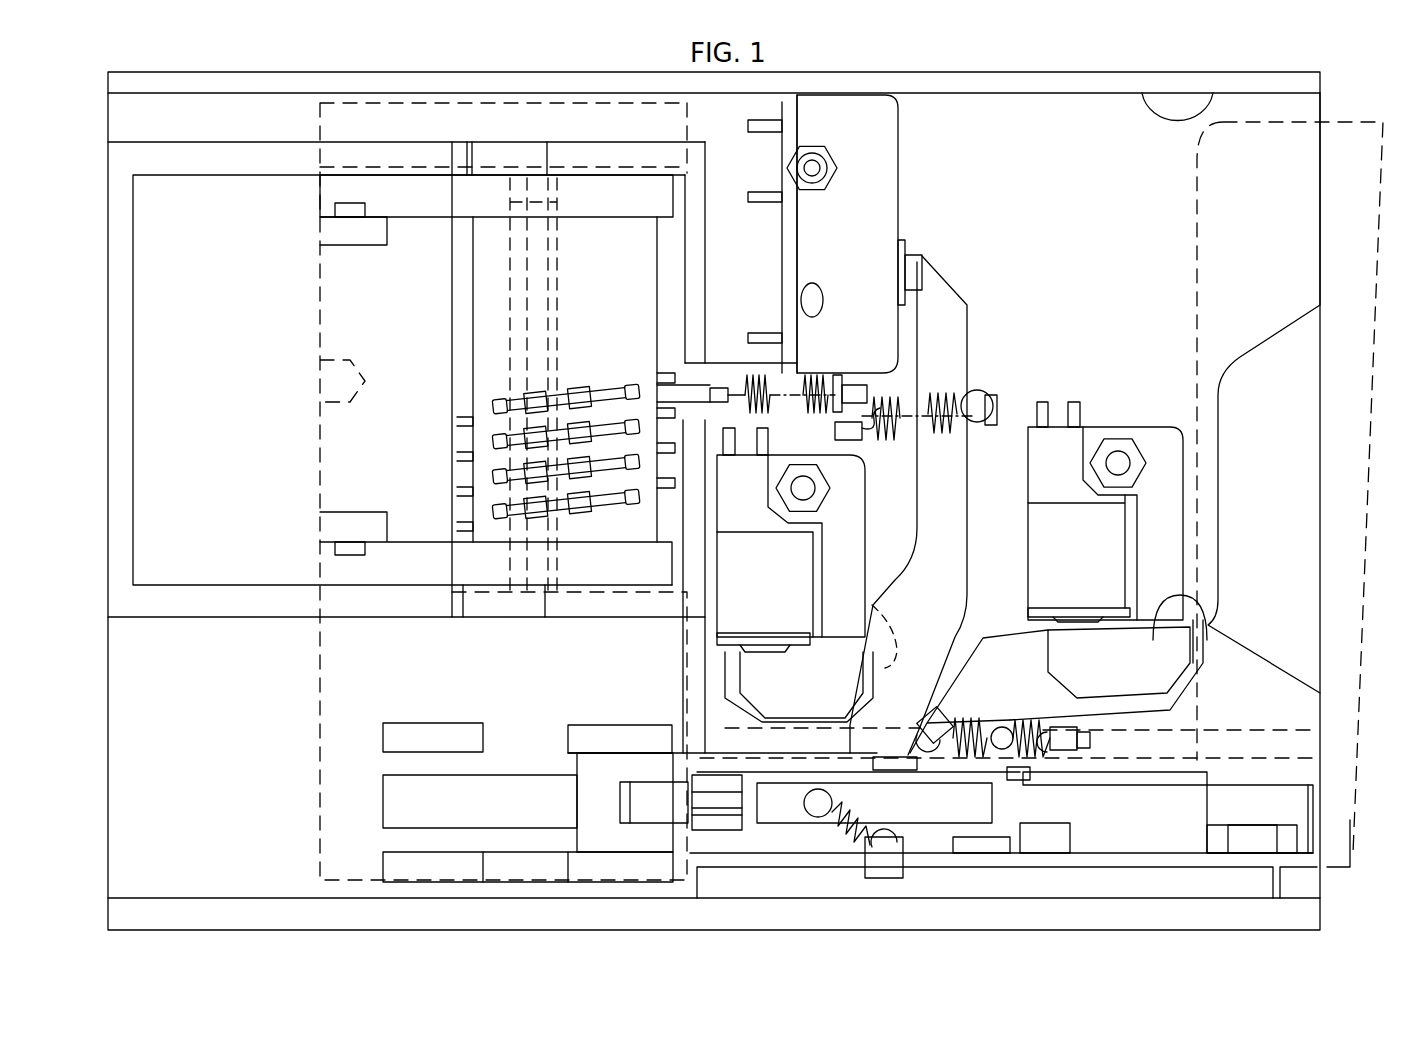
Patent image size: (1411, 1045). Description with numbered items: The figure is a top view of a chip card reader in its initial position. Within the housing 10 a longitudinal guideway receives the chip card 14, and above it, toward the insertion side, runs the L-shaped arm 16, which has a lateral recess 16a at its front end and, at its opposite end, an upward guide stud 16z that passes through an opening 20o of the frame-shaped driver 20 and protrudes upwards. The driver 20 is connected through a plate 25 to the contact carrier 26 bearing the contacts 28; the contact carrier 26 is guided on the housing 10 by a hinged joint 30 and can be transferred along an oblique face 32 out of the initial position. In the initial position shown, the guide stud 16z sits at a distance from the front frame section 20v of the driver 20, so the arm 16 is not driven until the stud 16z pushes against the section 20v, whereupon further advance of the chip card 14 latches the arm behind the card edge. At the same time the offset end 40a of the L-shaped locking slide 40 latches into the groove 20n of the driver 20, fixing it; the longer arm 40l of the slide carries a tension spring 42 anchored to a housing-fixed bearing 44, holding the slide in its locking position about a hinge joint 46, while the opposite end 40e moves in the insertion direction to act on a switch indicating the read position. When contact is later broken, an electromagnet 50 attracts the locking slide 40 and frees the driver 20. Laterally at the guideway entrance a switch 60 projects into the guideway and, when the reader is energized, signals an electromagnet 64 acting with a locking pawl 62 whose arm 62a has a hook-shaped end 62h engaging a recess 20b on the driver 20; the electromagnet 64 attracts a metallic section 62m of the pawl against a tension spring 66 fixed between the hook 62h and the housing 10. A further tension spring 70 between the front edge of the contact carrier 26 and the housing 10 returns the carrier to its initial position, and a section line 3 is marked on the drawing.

The housing 10 is at (213, 907).
The chip card 14 is at (1333, 670).
The L-shaped arm 16 is at (1142, 835).
The lateral recess 16a is at (1245, 852).
The guide stud 16z is at (807, 805).
The driver 20 is at (930, 848).
The recess 20b is at (968, 842).
The groove 20n is at (887, 768).
The opening 20o is at (1000, 862).
The front frame section 20v is at (1030, 838).
The plate 25 is at (335, 667).
The contact carrier 26 is at (630, 245).
The contacts 28 is at (490, 400).
The hinged joint 30 is at (348, 203).
The oblique face 32 is at (438, 185).
The locking slide 40 is at (950, 307).
The offset end 40a is at (723, 696).
The opposite end 40e is at (926, 254).
The longer arm 40l is at (950, 535).
The tension spring 42 is at (915, 390).
The bearing 44 is at (846, 372).
The hinge joint 46 is at (880, 630).
The electromagnet 50 is at (735, 580).
The switch 60 is at (1157, 110).
The locking pawl 62 is at (1205, 668).
The arm 62a is at (1003, 656).
The hook-shaped end 62h is at (937, 762).
The metallic section 62m is at (1208, 628).
The electromagnet 64 is at (1115, 569).
The tension spring 66 is at (1048, 764).
The tension spring 70 is at (773, 383).
The section line 3 is at (393, 815).